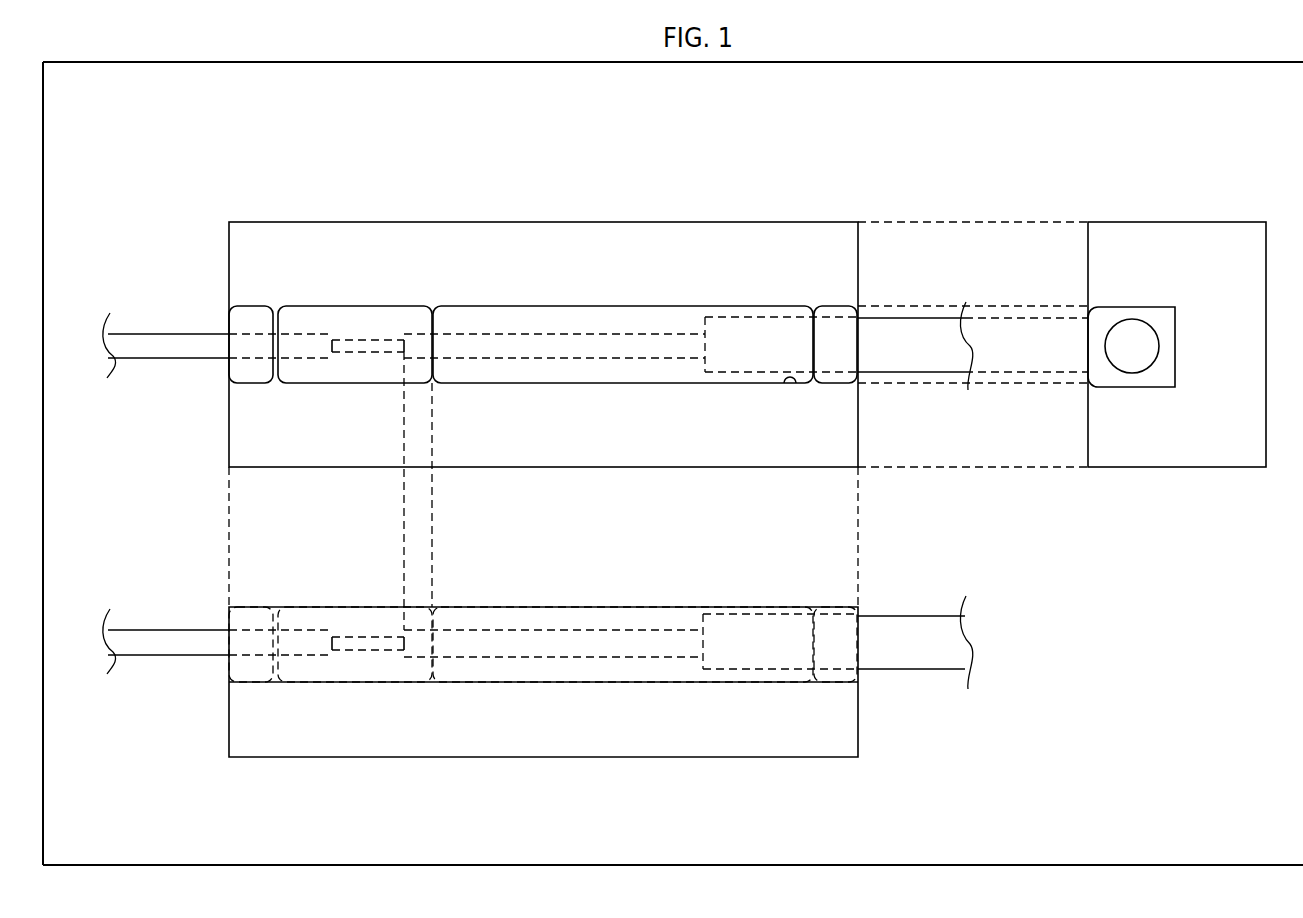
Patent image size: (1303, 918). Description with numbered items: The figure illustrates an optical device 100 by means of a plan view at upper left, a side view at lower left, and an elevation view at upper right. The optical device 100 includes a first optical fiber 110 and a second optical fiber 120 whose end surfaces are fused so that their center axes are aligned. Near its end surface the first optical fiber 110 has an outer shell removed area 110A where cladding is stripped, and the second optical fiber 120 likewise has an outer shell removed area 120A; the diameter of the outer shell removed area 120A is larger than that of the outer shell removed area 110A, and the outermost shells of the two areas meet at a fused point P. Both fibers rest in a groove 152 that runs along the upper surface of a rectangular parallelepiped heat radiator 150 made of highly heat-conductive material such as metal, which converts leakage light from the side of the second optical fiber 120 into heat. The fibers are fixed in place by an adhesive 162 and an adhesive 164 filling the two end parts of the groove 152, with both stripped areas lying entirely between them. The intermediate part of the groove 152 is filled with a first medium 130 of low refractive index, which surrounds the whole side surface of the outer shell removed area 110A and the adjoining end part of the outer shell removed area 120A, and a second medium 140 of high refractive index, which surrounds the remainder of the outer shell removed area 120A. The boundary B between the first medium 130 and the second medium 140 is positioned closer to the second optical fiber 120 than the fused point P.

The optical device 100 is at (1229, 131).
The first optical fiber 110 is at (133, 337).
The outer shell removed area 110A is at (352, 355).
The second optical fiber 120 is at (928, 325).
The outer shell removed area 120A is at (587, 362).
The first medium 130 is at (349, 320).
The second medium 140 is at (600, 320).
The heat radiator 150 is at (734, 457).
The groove 152 is at (790, 388).
The adhesive 162 is at (252, 320).
The adhesive 164 is at (831, 318).
The fused point P is at (403, 327).
The boundary B is at (433, 305).